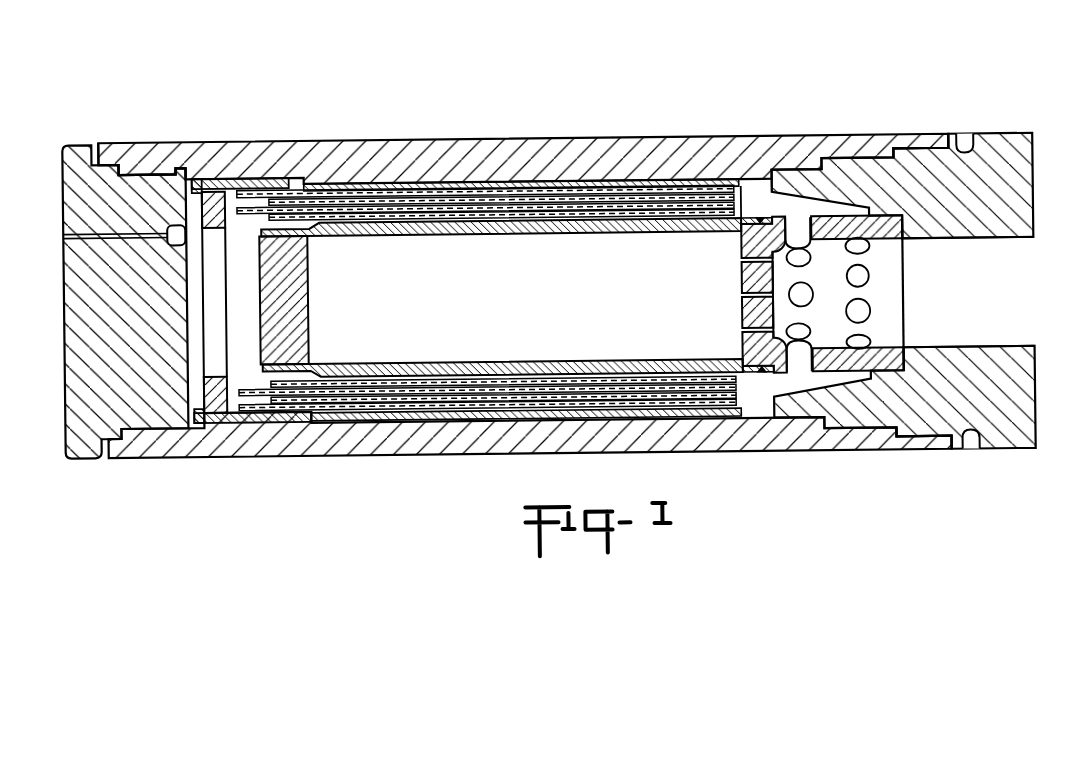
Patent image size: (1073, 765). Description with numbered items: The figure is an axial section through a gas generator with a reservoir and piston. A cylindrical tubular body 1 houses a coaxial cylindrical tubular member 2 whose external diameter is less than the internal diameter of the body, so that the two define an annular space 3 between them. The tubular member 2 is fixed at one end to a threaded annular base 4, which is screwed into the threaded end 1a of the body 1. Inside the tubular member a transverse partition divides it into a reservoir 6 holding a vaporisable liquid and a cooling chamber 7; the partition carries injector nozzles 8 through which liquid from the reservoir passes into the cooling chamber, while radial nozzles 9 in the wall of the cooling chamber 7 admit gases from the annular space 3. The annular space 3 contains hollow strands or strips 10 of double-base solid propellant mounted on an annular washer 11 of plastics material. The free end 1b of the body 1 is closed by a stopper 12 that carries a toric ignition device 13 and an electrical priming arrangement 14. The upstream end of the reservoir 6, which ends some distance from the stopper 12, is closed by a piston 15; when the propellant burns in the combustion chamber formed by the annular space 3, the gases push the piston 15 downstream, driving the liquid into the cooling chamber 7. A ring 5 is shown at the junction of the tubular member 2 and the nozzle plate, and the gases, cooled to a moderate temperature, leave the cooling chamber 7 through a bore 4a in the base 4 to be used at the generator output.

The cylindrical tubular body 1 is at (483, 156).
The threaded end 1a is at (918, 148).
The free end 1b is at (136, 152).
The cylindrical tubular member 2 is at (494, 229).
The annular space 3 is at (758, 202).
The threaded annular base 4 is at (846, 176).
The bore 4a is at (968, 292).
The retaining ring 5 is at (750, 248).
The reservoir 6 is at (520, 310).
The cooling chamber 7 is at (880, 308).
The injector nozzles 8 is at (750, 268).
The radial nozzles 9 is at (801, 244).
The hollow strands or strips of solid propellant 10 is at (425, 194).
The annular washer 11 is at (302, 188).
The stopper 12 is at (75, 159).
The toric ignition device 13 is at (232, 227).
The electrical priming arrangement 14 is at (64, 234).
The piston 15 is at (297, 277).